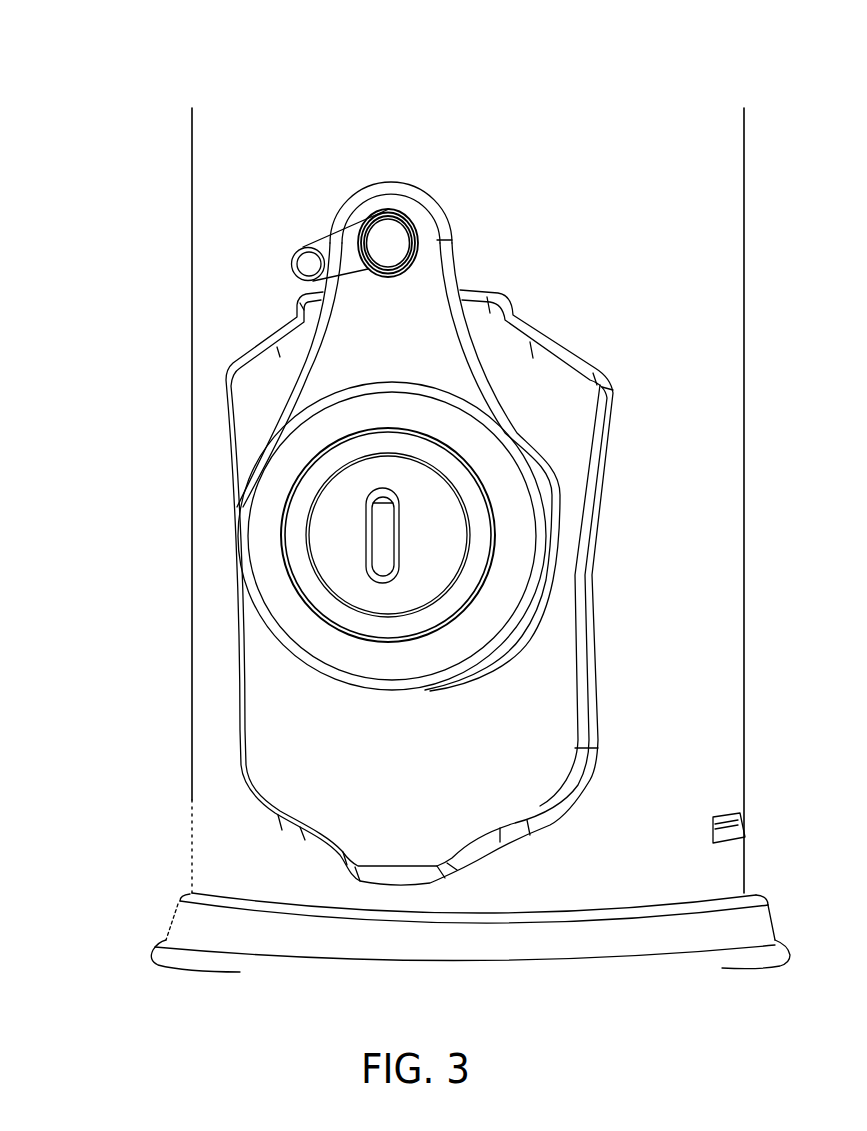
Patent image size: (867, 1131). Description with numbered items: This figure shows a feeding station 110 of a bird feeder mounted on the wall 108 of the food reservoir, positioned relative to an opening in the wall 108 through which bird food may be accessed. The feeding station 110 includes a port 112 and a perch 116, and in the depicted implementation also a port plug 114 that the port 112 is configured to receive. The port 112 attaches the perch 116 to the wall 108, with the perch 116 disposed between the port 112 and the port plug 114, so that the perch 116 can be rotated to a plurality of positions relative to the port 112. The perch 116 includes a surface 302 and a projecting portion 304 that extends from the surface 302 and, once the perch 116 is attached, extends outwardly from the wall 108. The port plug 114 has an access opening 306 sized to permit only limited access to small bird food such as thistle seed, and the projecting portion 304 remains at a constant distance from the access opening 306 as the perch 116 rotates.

The feeding station 110 is at (240, 50).
The wall 108 is at (192, 165).
The port 112 is at (237, 710).
The port plug 114 is at (278, 537).
The perch 116 is at (264, 325).
The surface 302 is at (438, 355).
The projecting portion 304 is at (362, 277).
The access opening 306 is at (398, 527).